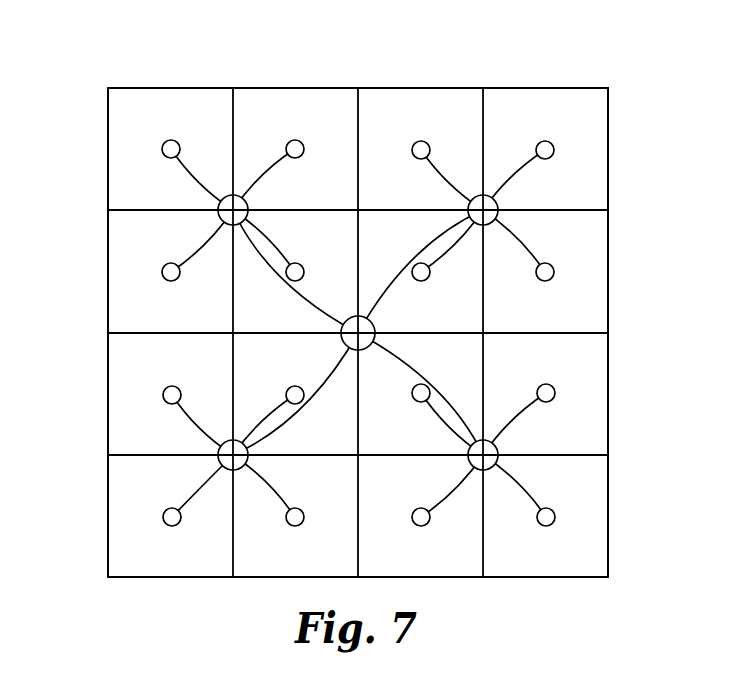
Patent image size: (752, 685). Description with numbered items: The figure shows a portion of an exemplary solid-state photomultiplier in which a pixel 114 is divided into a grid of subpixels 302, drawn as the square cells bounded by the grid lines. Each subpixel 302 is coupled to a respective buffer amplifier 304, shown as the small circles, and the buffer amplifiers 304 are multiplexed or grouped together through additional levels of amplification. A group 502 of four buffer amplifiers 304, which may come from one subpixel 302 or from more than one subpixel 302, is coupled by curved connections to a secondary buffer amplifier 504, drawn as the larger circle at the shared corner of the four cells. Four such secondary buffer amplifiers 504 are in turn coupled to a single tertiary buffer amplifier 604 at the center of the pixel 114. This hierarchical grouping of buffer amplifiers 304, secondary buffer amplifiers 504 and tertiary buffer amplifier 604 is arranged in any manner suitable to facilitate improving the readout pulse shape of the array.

The pixel 114 is at (593, 71).
The subpixel 302 is at (184, 88).
The buffer amplifier 304 is at (164, 142).
The group of buffer amplifiers 502 is at (179, 210).
The secondary buffer amplifier 504 is at (249, 205).
The tertiary buffer amplifier 604 is at (375, 325).